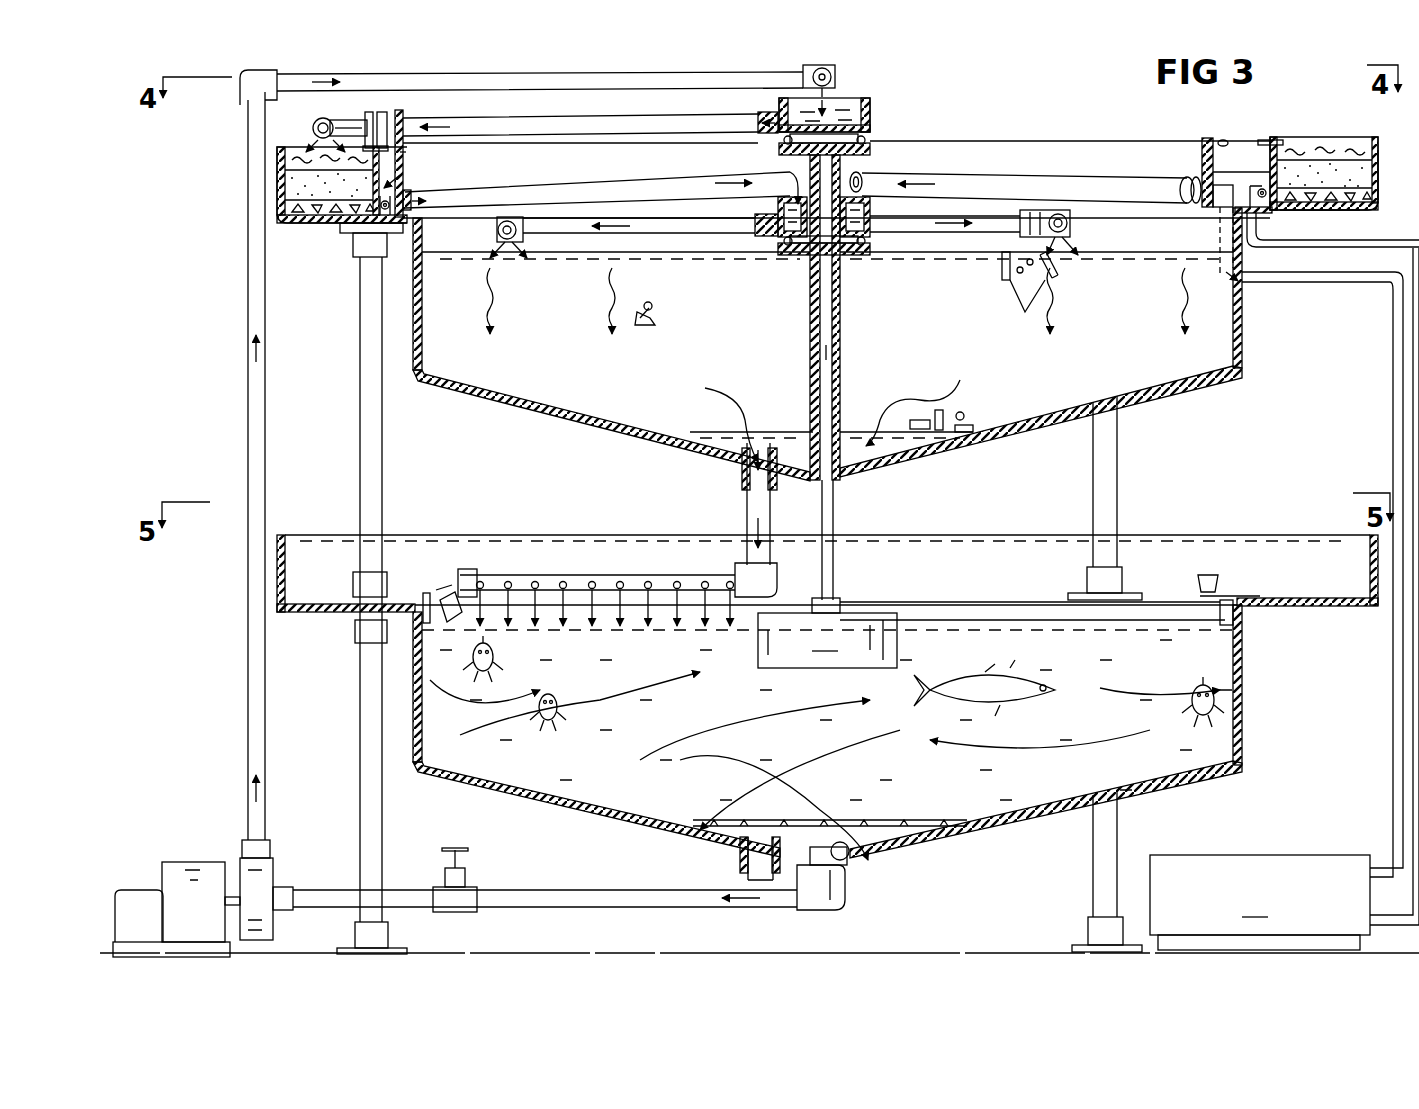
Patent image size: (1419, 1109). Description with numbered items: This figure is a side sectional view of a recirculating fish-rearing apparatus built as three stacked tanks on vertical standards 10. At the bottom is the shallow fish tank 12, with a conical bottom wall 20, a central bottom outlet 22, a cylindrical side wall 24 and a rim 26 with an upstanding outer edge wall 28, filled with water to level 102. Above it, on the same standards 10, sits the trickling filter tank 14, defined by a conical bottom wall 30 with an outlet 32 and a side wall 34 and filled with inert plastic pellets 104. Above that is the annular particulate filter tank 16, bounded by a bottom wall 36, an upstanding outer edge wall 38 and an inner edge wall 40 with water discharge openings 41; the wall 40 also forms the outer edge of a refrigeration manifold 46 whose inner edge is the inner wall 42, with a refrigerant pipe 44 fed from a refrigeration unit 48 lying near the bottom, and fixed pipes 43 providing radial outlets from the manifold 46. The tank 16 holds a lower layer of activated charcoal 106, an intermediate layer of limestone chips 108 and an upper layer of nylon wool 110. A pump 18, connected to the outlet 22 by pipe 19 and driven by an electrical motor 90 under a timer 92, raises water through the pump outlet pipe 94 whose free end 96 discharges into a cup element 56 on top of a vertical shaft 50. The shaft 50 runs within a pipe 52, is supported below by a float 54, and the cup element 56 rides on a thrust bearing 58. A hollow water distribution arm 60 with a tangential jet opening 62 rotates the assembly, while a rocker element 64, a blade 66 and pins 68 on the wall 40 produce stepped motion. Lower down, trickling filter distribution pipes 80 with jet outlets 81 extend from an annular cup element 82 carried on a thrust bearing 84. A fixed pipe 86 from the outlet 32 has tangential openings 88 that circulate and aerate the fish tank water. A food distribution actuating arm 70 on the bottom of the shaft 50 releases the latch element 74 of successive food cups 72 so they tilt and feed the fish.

The vertical standards 10 is at (358, 357).
The fish tank 12 is at (1255, 742).
The trickling filter tank 14 is at (1252, 372).
The particulate filter tank 16 is at (1311, 140).
The pump 18 is at (275, 873).
The pipe 19 is at (638, 890).
The conical bottom wall 20 is at (985, 830).
The central bottom outlet 22 is at (852, 856).
The cylindrical side wall 24 is at (1244, 670).
The rim 26 is at (1315, 608).
The upstanding outer edge wall 28 is at (1372, 556).
The conical bottom wall 30 is at (975, 442).
The outlet 32 is at (745, 452).
The side wall 34 is at (1244, 307).
The bottom wall 36 is at (1340, 211).
The upstanding outer edge wall 38 is at (1378, 147).
The inner edge wall 40 is at (1268, 140).
The water discharge openings 41 is at (350, 230).
The inner wall 42 is at (1177, 140).
The fixed pipes 43 is at (655, 180).
The refrigerant pipe 44 is at (398, 208).
The refrigeration manifold 46 is at (398, 186).
The refrigeration unit 48 is at (1260, 902).
The vertical shaft 50 is at (827, 352).
The pipe 52 is at (842, 362).
The float 54 is at (827, 640).
The cup element 56 is at (872, 110).
The thrust bearing 58 is at (873, 143).
The particulate filter water distribution arm 60 is at (657, 120).
The water jet opening 62 is at (318, 121).
The rocker element 64 is at (375, 130).
The blade 66 is at (313, 126).
The pins 68 is at (405, 152).
The food distribution actuating arm 70 is at (1150, 612).
The food cups 72 is at (452, 595).
The latch element 74 is at (427, 595).
The trickling filter distribution pipes 80 is at (650, 236).
The jet outlets 81 is at (497, 229).
The annular cup element 82 is at (876, 240).
The thrust bearing 84 is at (772, 250).
The fixed pipe 86 is at (520, 574).
The tangential openings 88 is at (620, 581).
The electrical motor 90 is at (200, 862).
The timer 92 is at (135, 890).
The pump outlet pipe 94 is at (247, 410).
The free end 96 is at (838, 79).
The water level 102 is at (1042, 620).
The inert plastic pellets 104 is at (1012, 300).
The activated charcoal 106 is at (293, 190).
The limestone chips 108 is at (292, 210).
The nylon wool 110 is at (280, 162).